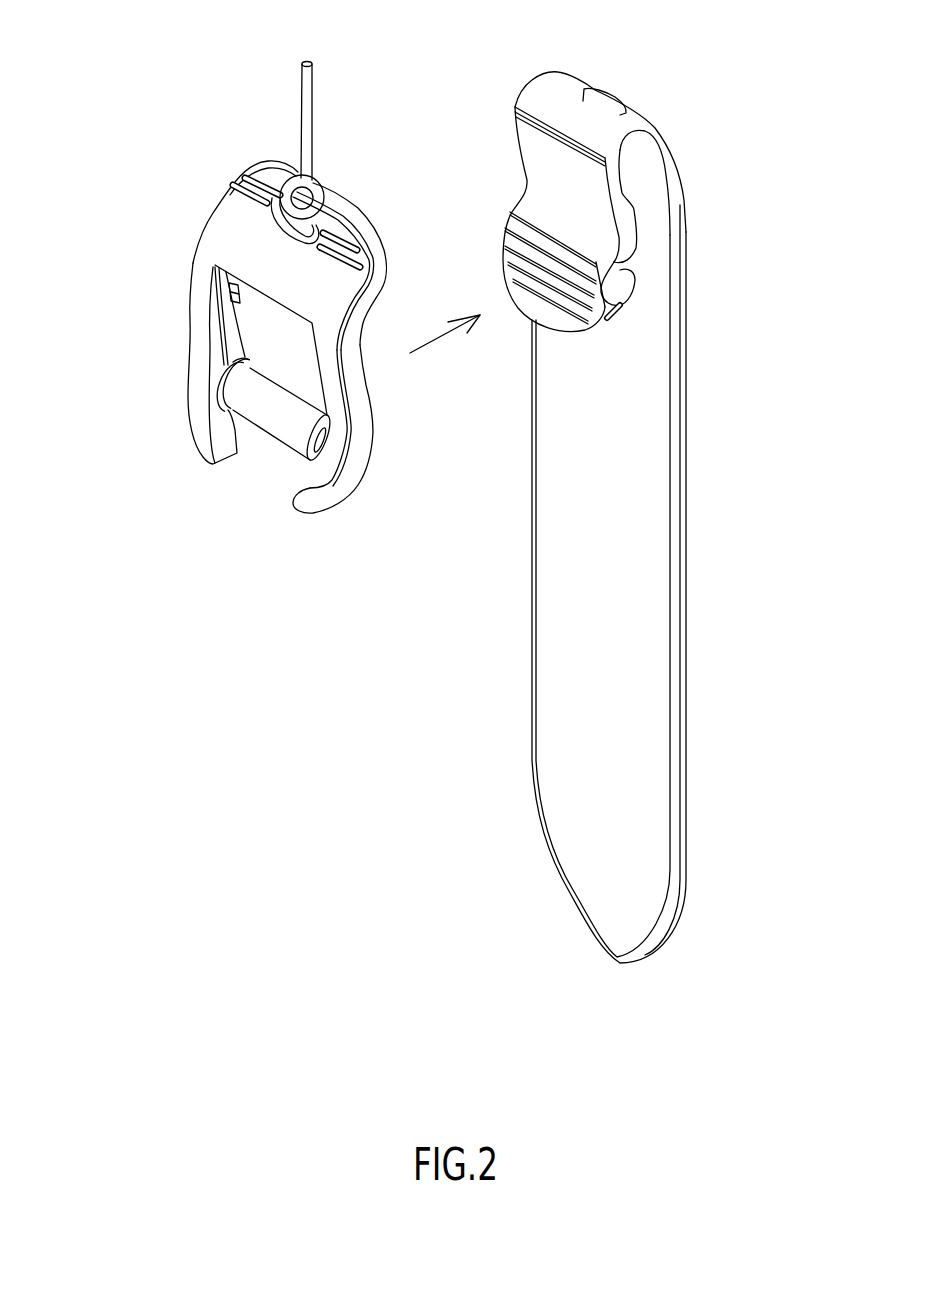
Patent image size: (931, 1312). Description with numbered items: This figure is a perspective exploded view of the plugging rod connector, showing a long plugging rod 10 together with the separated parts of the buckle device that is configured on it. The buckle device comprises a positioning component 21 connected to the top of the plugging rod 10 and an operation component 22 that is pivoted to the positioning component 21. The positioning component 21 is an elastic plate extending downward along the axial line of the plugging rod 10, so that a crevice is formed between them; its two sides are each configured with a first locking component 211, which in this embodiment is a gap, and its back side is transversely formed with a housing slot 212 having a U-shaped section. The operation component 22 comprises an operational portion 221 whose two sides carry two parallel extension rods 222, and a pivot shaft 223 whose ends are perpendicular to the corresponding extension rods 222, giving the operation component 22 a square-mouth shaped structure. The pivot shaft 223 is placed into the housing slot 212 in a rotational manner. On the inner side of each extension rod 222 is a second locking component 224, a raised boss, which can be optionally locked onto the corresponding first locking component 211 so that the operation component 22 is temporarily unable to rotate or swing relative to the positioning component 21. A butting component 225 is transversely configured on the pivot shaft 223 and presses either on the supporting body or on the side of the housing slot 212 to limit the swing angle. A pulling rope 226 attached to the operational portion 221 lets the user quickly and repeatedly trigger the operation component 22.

The plugging rod 10 is at (518, 657).
The positioning component 21 is at (605, 170).
The first locking component 211 is at (623, 190).
The housing slot 212 is at (618, 260).
The operation component 22 is at (269, 309).
The operational portion 221 is at (248, 253).
The extension rods 222 is at (208, 340).
The pivot shaft 223 is at (250, 410).
The second locking component 224 is at (230, 290).
The butting component 225 is at (290, 393).
The pulling rope 226 is at (306, 117).